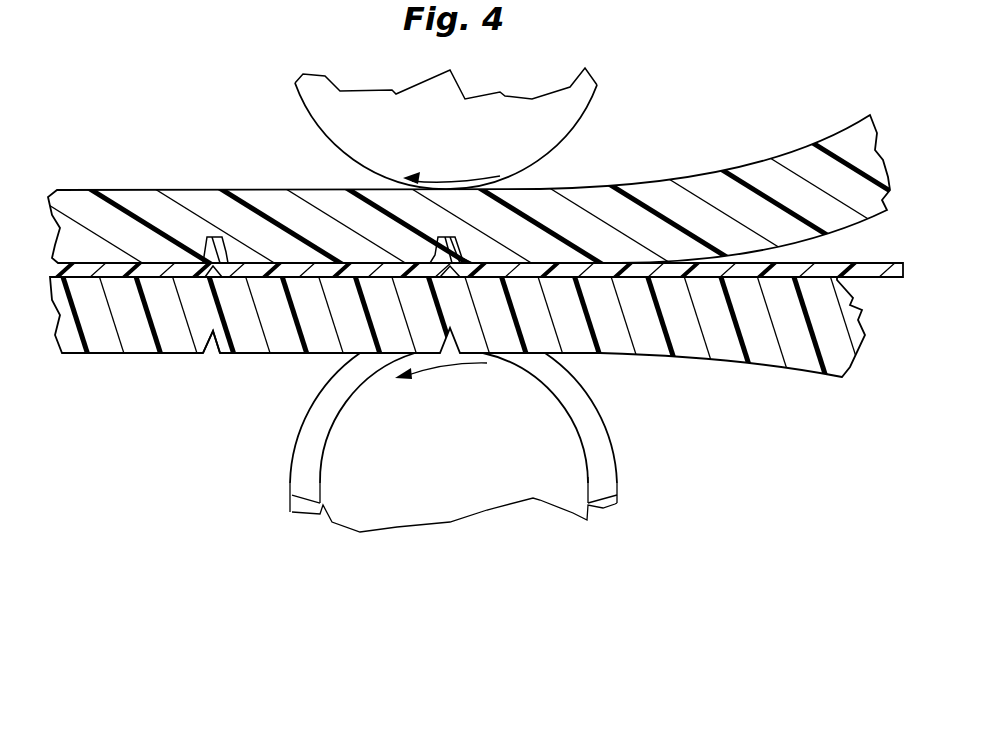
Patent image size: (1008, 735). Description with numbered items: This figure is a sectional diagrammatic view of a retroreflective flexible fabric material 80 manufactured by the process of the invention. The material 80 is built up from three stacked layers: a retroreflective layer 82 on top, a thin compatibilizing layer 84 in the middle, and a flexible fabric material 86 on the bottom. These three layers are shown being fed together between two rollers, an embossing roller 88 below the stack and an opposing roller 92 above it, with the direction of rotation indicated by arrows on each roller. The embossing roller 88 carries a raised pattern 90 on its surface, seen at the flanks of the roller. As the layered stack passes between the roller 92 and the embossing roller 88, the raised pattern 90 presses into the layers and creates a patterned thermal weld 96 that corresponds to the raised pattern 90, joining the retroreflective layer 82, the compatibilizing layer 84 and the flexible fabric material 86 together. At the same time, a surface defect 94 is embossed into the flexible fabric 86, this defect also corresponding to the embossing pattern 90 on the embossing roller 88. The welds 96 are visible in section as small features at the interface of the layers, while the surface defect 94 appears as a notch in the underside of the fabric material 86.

The retroreflective flexible fabric material 80 is at (174, 172).
The retroreflective layer 82 is at (765, 172).
The compatibilizing layer 84 is at (838, 278).
The flexible fabric material 86 is at (797, 363).
The embossing roller 88 is at (600, 413).
The raised pattern 90 is at (292, 495).
The roller 92 is at (580, 122).
The surface defect 94 is at (214, 358).
The patterned thermal weld 96 is at (437, 243).